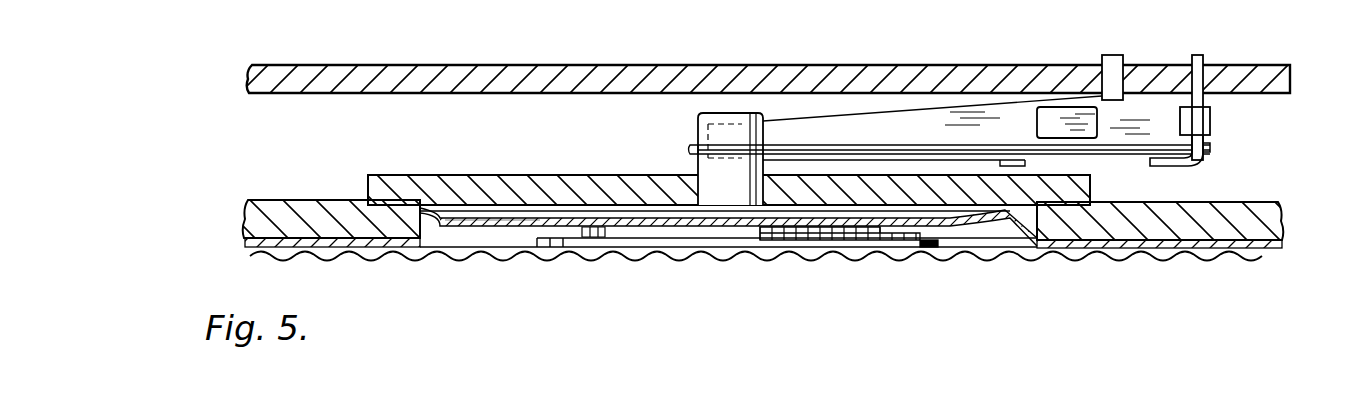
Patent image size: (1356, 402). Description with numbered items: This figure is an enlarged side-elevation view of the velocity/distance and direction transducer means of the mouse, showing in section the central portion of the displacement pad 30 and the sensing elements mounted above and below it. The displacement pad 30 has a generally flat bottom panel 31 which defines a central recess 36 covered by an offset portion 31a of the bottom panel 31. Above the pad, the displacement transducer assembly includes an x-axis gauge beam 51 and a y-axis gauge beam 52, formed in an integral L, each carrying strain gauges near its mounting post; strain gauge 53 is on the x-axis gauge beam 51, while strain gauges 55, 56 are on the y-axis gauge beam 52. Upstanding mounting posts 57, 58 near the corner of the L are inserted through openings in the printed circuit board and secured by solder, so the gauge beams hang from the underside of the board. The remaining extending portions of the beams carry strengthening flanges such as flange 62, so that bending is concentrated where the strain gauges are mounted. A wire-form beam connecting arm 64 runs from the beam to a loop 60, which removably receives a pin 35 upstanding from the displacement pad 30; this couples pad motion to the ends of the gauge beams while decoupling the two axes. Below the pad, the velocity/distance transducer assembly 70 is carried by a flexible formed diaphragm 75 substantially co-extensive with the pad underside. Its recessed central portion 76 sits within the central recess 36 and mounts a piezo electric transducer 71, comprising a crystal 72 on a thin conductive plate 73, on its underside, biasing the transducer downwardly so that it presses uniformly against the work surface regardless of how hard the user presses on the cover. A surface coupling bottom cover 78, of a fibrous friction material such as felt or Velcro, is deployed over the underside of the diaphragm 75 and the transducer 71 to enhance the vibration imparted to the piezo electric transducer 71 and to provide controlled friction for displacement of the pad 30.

The displacement pad 30 is at (237, 188).
The bottom panel 31 is at (310, 200).
The offset portion 31a is at (455, 175).
The pin 35 is at (735, 113).
The central recess 36 is at (604, 215).
The x-axis gauge beam 51 is at (858, 120).
The y-axis gauge beam 52 is at (1215, 105).
The strain gauge 53 is at (1050, 118).
The strain gauge 55 is at (1178, 118).
The strain gauge 56 is at (1215, 125).
The mounting post 57 is at (1115, 55).
The mounting post 58 is at (1198, 55).
The loop 60 is at (690, 150).
The strengthening flange 62 is at (1170, 166).
The beam connecting arm 64 is at (1085, 155).
The velocity/distance transducer assembly 70 is at (600, 264).
The piezo electric transducer 71 is at (940, 242).
The crystal 72 is at (651, 242).
The thin conductive plate 73 is at (760, 244).
The flexible formed diaphragm 75 is at (469, 228).
The recessed central portion 76 is at (515, 228).
The surface coupling bottom cover 78 is at (1106, 262).